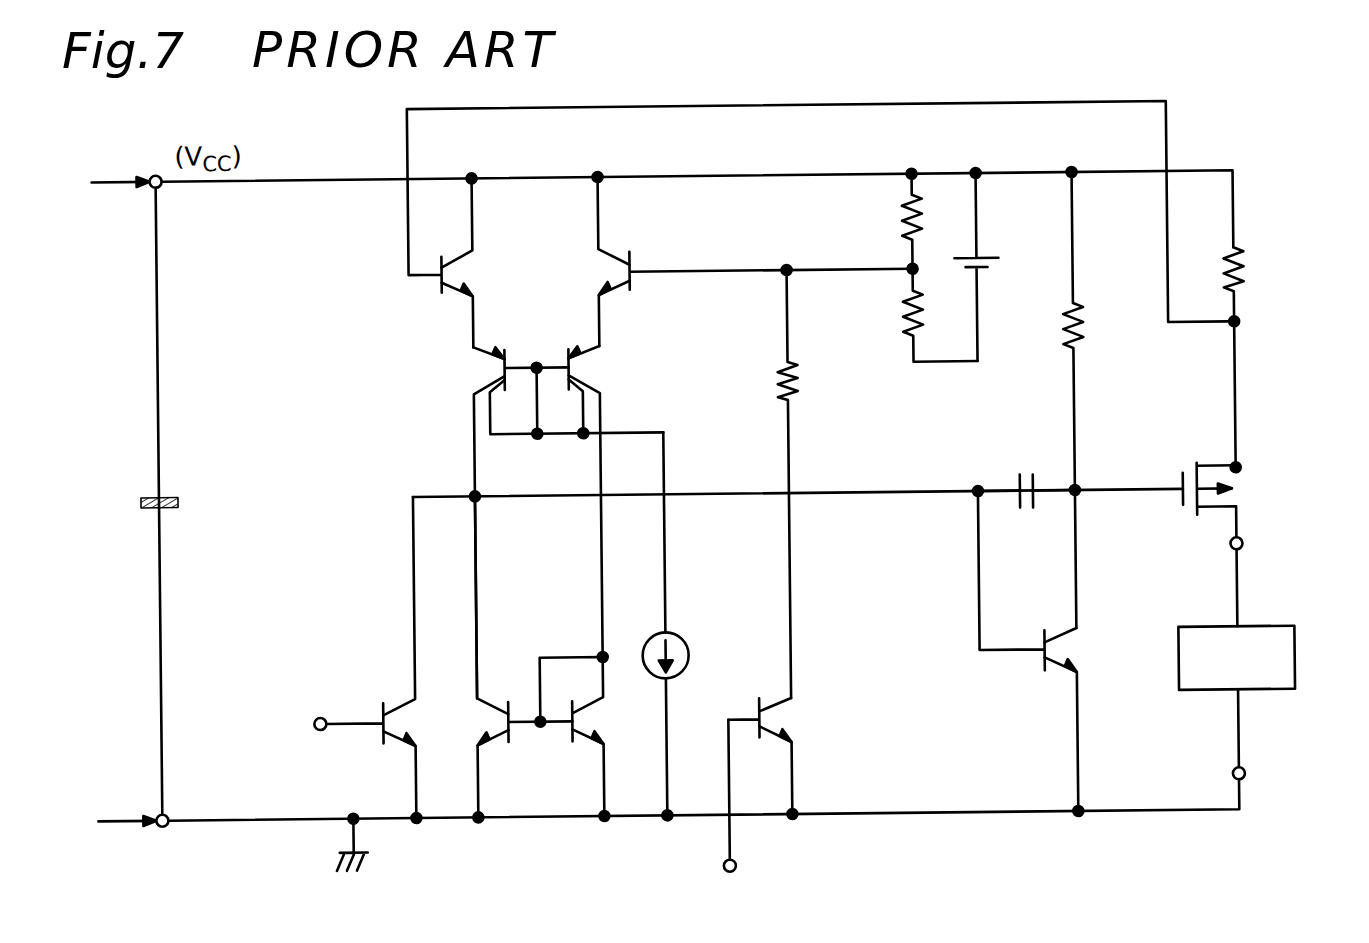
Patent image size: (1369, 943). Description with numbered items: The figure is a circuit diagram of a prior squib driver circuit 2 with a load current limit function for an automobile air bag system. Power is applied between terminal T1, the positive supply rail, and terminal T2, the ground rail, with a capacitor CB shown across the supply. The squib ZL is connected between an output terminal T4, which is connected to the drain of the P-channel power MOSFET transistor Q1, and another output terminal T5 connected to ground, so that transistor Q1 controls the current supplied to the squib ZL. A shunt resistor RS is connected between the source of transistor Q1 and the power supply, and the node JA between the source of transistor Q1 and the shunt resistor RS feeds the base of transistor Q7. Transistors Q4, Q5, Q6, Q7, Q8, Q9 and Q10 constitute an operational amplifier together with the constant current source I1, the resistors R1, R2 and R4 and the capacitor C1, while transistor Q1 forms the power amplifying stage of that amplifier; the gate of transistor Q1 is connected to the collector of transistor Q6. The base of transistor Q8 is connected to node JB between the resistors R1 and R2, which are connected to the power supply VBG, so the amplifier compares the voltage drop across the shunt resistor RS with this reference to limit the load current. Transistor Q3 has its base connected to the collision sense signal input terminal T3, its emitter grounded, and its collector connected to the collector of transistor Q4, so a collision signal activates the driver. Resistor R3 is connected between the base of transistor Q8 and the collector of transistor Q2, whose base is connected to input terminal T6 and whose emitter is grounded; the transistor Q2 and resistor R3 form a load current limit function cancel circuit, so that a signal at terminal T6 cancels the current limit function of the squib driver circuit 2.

The squib driver circuit 2 is at (678, 886).
The power supply terminal (Vcc) T1 is at (150, 183).
The ground terminal T2 is at (159, 822).
The collision sense signal input terminal T3 is at (315, 713).
The output terminal T4 is at (1229, 549).
The output terminal T5 is at (1229, 779).
The input terminal T6 is at (733, 866).
The bypass capacitor CB is at (142, 494).
The transistor Q1 is at (1195, 466).
The transistor Q2 is at (757, 697).
The transistor Q3 is at (383, 698).
The transistor Q4 is at (508, 698).
The transistor Q5 is at (572, 742).
The transistor Q6 is at (1040, 676).
The transistor Q7 is at (440, 296).
The transistor Q8 is at (636, 296).
The transistor Q9 is at (500, 350).
The transistor Q10 is at (576, 350).
The resistor R1 is at (908, 222).
The resistor R2 is at (905, 340).
The resistor R3 is at (776, 384).
The resistor R4 is at (1068, 328).
The shunt resistor RS is at (1228, 262).
The node JA is at (1230, 333).
The node JB is at (921, 266).
The power supply VBG is at (990, 262).
The capacitor C1 is at (1026, 475).
The constant current source I1 is at (682, 645).
The squib ZL is at (1293, 656).